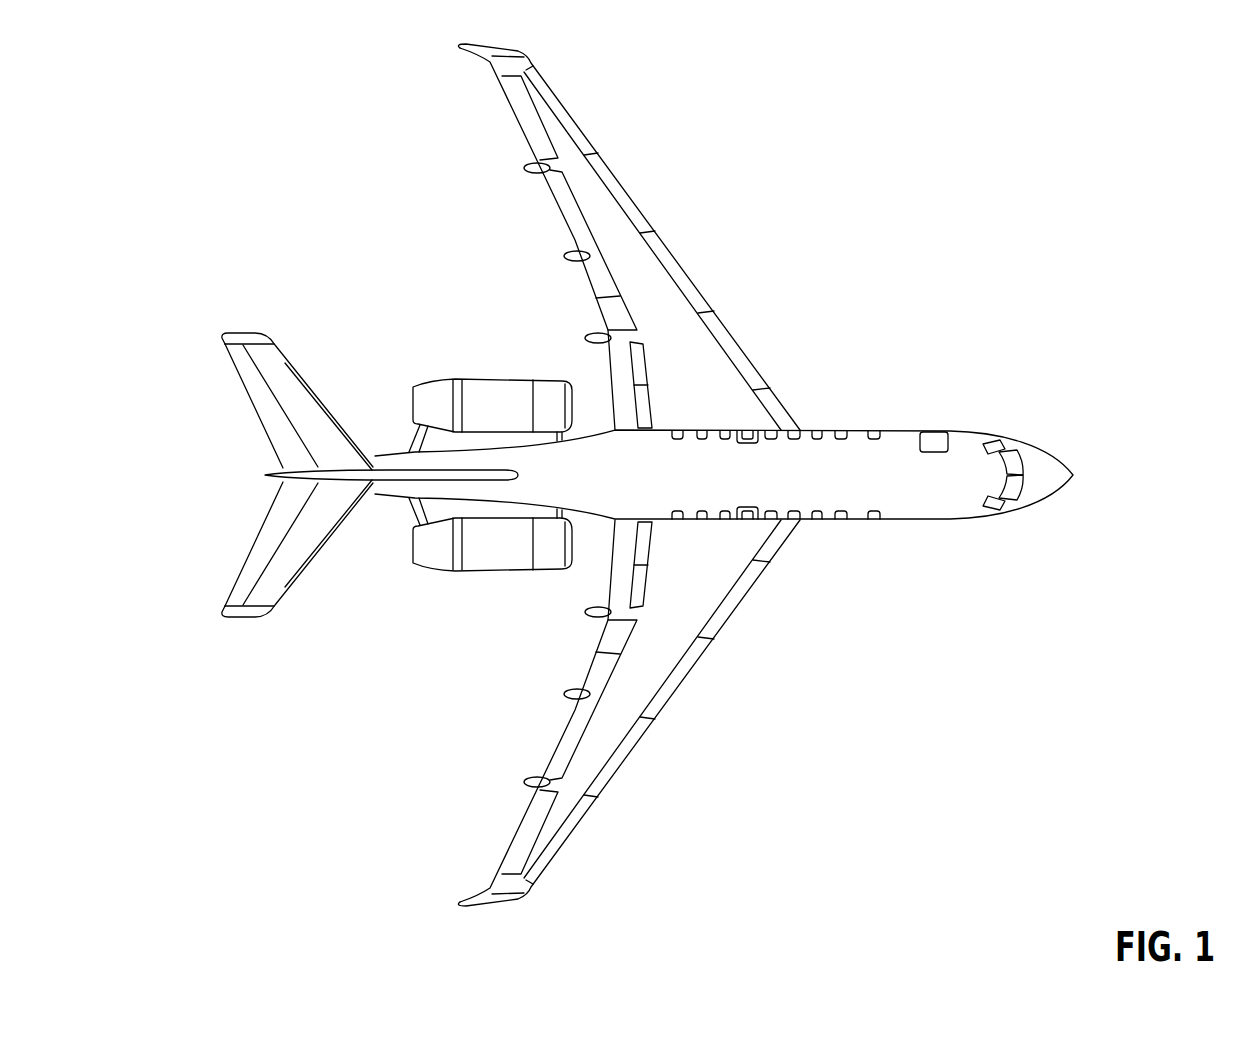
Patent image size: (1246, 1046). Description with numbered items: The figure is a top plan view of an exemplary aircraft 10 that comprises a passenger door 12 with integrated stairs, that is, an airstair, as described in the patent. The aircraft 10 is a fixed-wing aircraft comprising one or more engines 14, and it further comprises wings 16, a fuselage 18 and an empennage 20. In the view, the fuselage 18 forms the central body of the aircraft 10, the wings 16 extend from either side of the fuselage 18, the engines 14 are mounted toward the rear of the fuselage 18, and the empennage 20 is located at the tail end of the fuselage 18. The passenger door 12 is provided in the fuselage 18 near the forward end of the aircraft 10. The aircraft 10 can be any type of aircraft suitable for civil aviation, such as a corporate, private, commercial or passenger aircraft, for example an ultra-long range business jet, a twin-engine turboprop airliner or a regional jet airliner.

The aircraft 10 is at (649, 475).
The passenger door 12 is at (935, 431).
The engines 14 is at (492, 388).
The wings 16 is at (745, 296).
The fuselage 18 is at (890, 491).
The empennage 20 is at (220, 466).